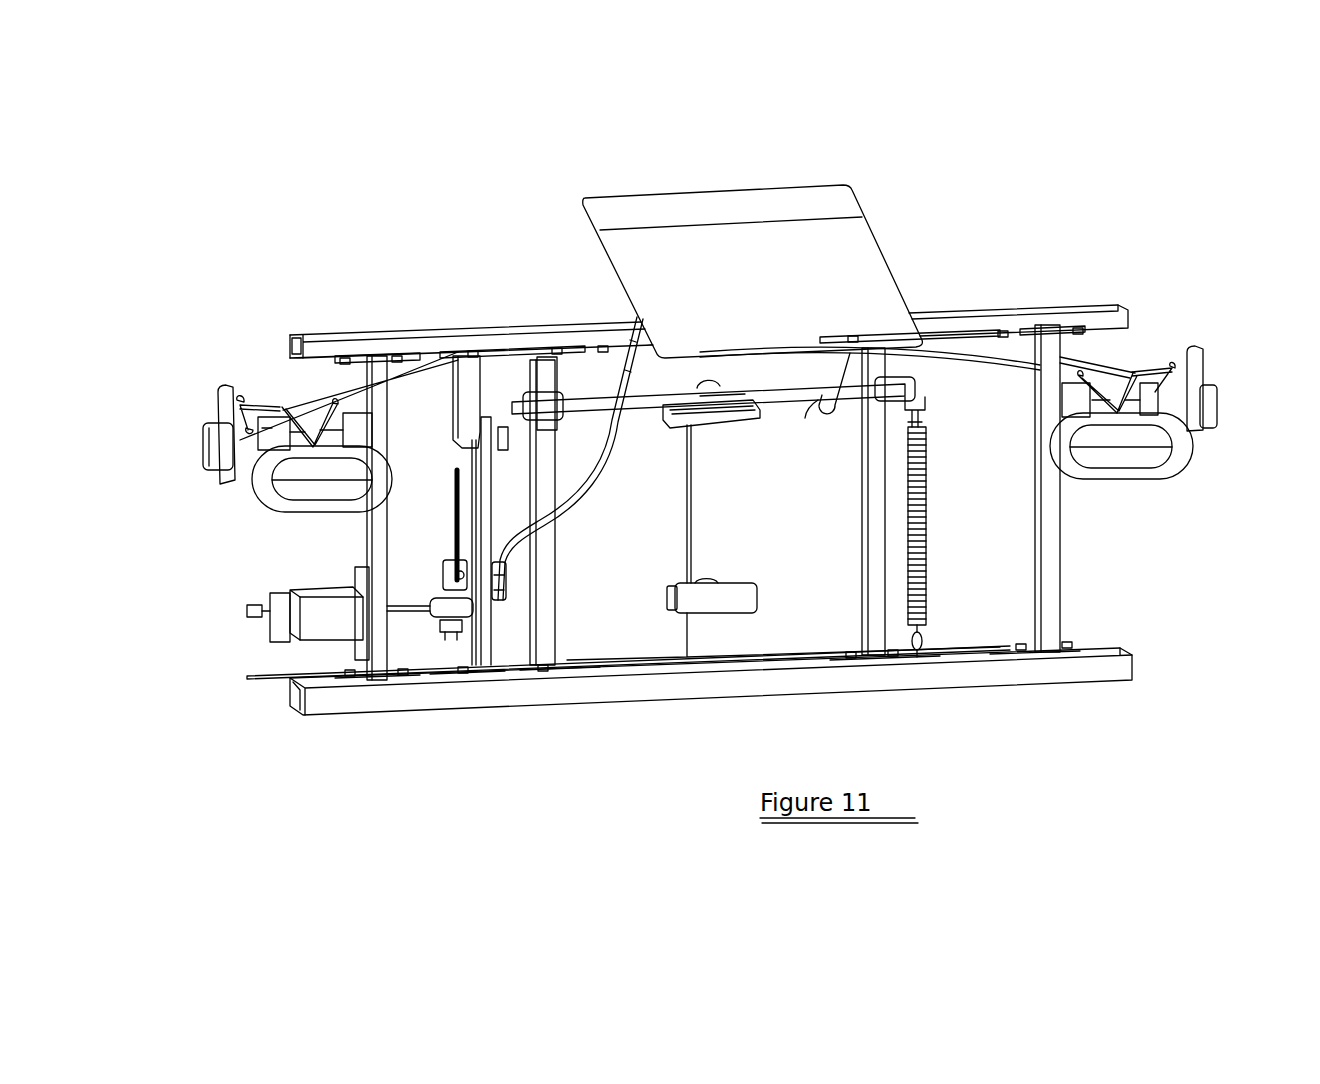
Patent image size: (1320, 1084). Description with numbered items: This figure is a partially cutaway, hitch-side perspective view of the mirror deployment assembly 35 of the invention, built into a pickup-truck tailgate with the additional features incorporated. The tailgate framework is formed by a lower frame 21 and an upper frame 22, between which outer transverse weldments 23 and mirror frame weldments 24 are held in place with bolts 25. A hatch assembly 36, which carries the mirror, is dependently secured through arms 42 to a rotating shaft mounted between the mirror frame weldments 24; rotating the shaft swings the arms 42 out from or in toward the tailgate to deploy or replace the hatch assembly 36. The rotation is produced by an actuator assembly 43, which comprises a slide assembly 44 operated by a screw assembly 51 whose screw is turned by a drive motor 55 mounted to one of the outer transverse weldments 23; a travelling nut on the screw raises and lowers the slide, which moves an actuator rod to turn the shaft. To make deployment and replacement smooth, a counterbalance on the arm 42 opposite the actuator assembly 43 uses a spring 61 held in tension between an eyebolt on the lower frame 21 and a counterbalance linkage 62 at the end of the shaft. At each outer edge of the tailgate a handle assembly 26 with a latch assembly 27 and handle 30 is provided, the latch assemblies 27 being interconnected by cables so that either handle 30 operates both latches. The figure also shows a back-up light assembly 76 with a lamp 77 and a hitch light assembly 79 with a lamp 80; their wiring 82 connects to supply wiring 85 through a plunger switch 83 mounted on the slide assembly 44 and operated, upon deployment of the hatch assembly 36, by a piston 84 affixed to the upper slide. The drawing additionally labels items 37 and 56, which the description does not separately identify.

The lower frame 21 is at (1097, 678).
The upper frame 22 is at (966, 320).
The outer transverse weldments 23 is at (365, 535).
The mirror frame weldments 24 is at (548, 636).
The bolts 25 is at (345, 360).
The handle assemblies 26 is at (712, 390).
The latch assemblies 27 is at (198, 427).
The handles 30 is at (262, 493).
The mirror deployment assembly 35 is at (503, 228).
The hatch assembly 36 is at (753, 248).
The panel fold line 37 is at (705, 210).
The arms 42 is at (818, 415).
The actuator assembly 43 is at (423, 693).
The slide assembly 44 is at (512, 593).
The screw assembly 51 is at (440, 503).
The drive motor 55 is at (325, 608).
The mounting bracket 56 is at (285, 633).
The spring 61 is at (922, 525).
The counterbalance linkage 62 is at (928, 392).
The back-up light assembly 76 is at (741, 594).
The lamp 77 is at (742, 582).
The hitch light assembly 79 is at (735, 377).
The lamp 80 is at (735, 430).
The wiring 82 is at (695, 506).
The plunger switch 83 is at (505, 578).
The piston 84 is at (510, 555).
The supply wiring 85 is at (260, 688).